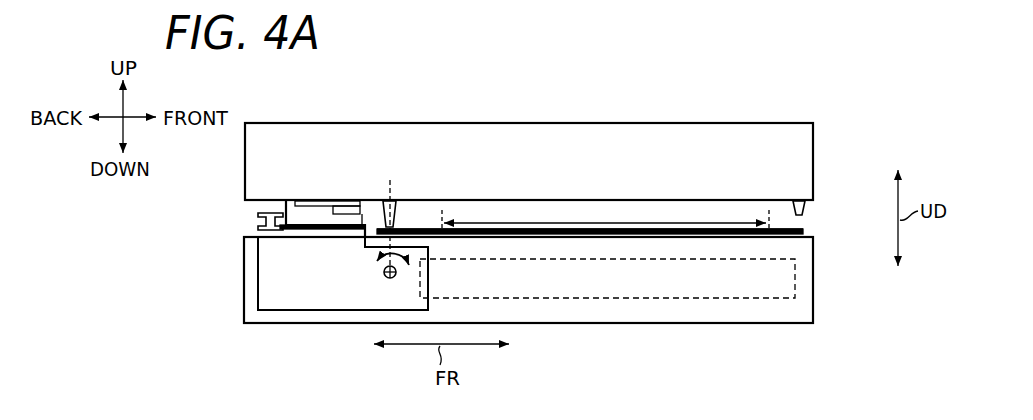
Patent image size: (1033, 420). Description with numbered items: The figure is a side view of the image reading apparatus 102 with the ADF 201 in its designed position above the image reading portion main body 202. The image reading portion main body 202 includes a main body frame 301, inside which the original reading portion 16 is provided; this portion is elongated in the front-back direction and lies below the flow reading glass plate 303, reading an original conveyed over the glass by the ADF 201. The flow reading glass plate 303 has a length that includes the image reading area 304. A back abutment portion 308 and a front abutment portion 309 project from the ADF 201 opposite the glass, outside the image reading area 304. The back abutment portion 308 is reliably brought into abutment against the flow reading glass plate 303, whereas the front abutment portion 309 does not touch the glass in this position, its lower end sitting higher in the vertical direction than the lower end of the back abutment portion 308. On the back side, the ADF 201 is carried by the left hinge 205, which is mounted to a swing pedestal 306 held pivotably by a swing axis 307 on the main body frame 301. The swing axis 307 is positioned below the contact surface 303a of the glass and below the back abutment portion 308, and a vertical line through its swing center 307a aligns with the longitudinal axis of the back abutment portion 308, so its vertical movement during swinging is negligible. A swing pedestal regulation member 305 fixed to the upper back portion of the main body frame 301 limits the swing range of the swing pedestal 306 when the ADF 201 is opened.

The image reading apparatus 102 is at (477, 111).
The ADF 201 is at (773, 121).
The image reading portion main body 202 is at (768, 325).
The left hinge 205 is at (288, 204).
The swing pedestal regulation member 305 is at (258, 230).
The back abutment portion 308 is at (391, 202).
The image reading area 304 is at (693, 224).
The front abutment portion 309 is at (807, 210).
The contact surface 303a is at (795, 230).
The flow reading glass plate 303 is at (807, 236).
The swing axis 307 is at (383, 272).
The swing center 307a is at (383, 280).
The swing pedestal 306 is at (296, 300).
The main body frame 301 is at (582, 323).
The original reading portion 16 is at (677, 288).